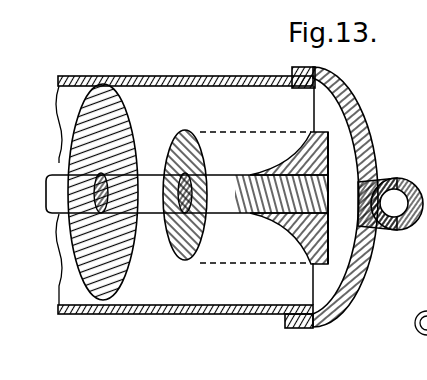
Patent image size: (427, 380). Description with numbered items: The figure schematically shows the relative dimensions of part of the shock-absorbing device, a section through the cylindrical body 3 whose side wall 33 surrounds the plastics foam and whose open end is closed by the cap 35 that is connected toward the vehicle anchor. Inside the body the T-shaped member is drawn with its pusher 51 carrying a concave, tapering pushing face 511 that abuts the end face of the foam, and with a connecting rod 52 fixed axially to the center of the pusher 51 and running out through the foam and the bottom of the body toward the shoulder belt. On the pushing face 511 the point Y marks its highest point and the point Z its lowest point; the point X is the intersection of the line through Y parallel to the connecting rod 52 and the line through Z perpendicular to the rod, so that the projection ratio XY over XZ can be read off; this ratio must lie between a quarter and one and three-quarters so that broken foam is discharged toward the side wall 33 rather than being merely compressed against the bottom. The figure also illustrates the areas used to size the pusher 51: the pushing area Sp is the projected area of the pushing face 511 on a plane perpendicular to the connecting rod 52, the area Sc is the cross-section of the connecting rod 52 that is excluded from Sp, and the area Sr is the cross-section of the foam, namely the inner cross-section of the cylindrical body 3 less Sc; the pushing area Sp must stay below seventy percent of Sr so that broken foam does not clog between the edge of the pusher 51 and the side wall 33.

The cylindrical body 3 is at (143, 76).
The side wall 33 is at (207, 298).
The cap 35 is at (339, 318).
The pusher 51 is at (330, 135).
The tapering pushing face 511 is at (292, 150).
The connecting rod 52 is at (153, 207).
The cross-sectional area of the plastics foam Sr is at (100, 273).
The pushing area Sp is at (177, 260).
The cross-sectional area of the connecting rod Sc is at (113, 187).
The point X is at (328, 232).
The point Y is at (243, 217).
The point Z is at (307, 266).